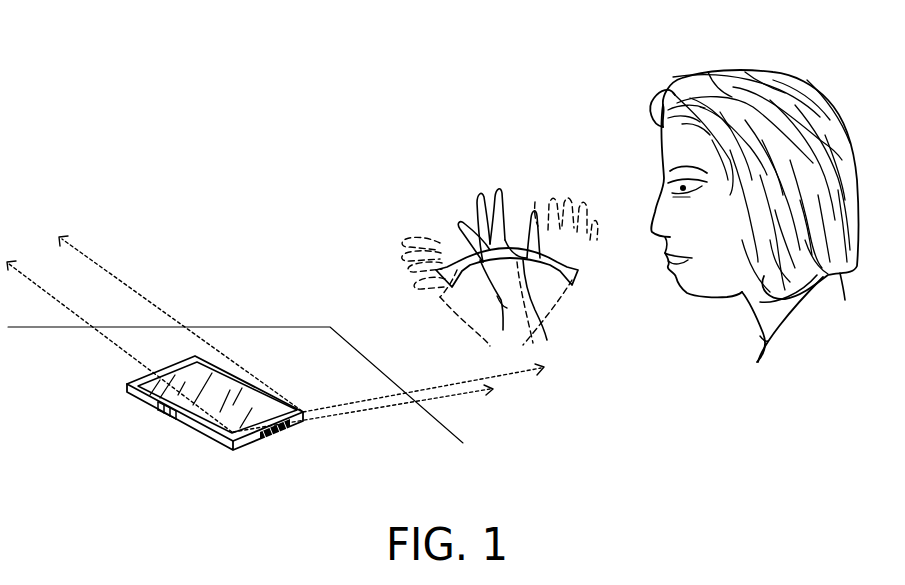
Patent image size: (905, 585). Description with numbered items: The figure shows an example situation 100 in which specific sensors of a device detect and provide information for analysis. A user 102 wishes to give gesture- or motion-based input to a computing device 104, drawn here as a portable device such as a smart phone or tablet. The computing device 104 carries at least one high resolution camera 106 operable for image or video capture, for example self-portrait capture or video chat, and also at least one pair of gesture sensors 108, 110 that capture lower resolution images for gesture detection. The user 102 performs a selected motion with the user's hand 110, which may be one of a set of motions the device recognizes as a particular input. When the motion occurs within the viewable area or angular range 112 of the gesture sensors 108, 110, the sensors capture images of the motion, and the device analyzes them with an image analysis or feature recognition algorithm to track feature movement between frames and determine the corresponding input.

The situation 100 is at (104, 108).
The user 102 is at (653, 103).
The computing device 104 is at (201, 383).
The high resolution camera 106 is at (160, 372).
The gesture sensor 108 is at (306, 418).
The gesture sensor / user's hand 110 is at (470, 207).
The viewable area or angular range 112 is at (379, 382).